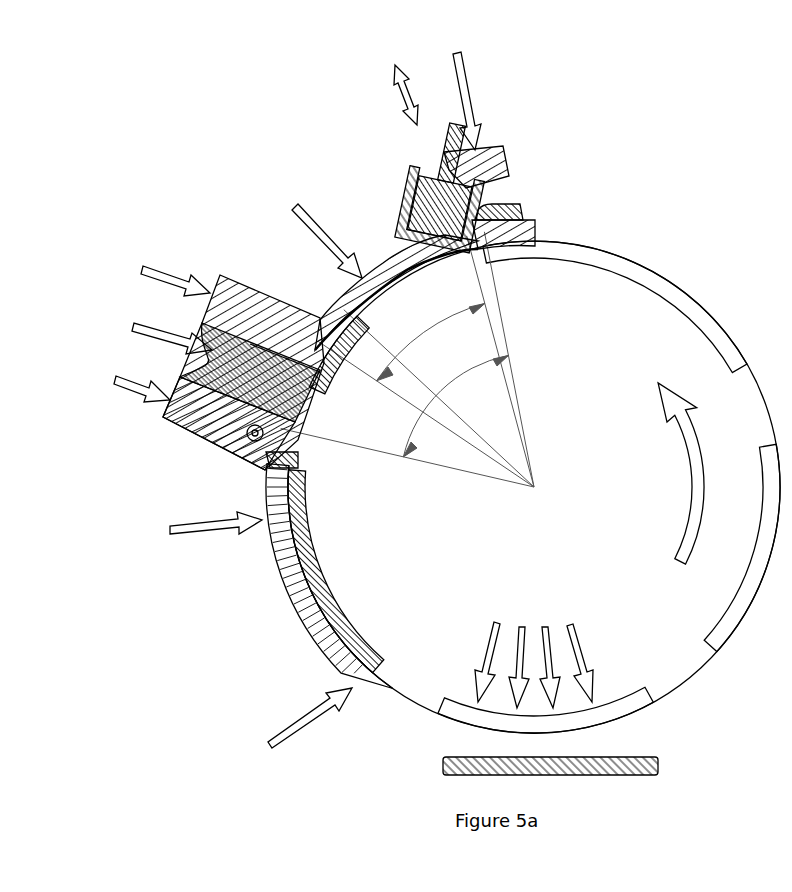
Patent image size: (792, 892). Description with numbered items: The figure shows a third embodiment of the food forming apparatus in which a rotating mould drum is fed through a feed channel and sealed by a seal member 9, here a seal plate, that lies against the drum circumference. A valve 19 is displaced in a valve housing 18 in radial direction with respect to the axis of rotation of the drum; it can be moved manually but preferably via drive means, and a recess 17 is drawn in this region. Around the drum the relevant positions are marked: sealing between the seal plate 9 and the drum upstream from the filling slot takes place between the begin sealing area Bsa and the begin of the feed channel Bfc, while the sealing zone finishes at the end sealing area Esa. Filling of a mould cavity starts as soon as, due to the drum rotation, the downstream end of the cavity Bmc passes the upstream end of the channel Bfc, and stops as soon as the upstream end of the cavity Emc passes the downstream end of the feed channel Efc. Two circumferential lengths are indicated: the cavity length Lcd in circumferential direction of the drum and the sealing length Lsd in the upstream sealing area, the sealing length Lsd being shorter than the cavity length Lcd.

The seal member 9 is at (287, 580).
The recess 17 is at (415, 243).
The valve housing 18 is at (493, 168).
The valve 19 is at (447, 198).
The begin sealing area Bsa is at (430, 240).
The begin feed channel Bfc is at (242, 239).
The begin mould cavity seen in rotational direction drum Bmc is at (229, 286).
The end feed channel Efc is at (217, 331).
The end mould cavity seen in rotational direction drum Emc is at (573, 189).
The end sealing area Esa is at (485, 736).
The cavity length in circumferential direction mould drum Lcd is at (431, 342).
The sealing length in upstream sealing area mould drum Lsd is at (455, 406).